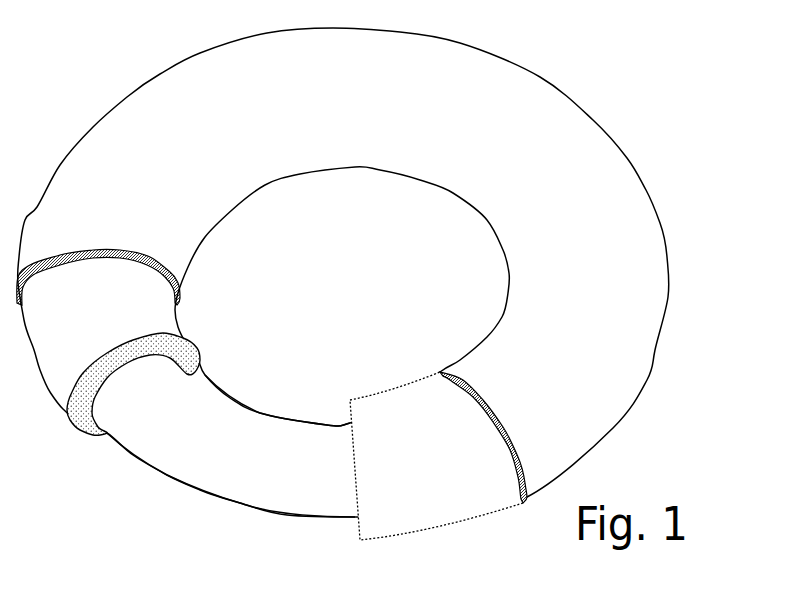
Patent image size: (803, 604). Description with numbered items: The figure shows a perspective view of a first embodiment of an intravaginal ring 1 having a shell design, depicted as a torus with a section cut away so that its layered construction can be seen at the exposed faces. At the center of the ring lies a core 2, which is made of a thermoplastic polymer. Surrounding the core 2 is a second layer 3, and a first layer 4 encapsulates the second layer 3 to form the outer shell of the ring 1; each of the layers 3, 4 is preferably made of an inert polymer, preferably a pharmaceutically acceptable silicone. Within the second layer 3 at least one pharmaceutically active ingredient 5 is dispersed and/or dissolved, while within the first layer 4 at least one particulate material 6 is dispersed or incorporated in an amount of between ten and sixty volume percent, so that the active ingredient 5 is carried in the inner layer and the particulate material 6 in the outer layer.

The intravaginal ring 1 is at (670, 134).
The core 2 is at (233, 490).
The second layer 3 is at (447, 495).
The first layer 4 is at (615, 341).
The pharmaceutically active ingredient 5 is at (82, 433).
The particulate material 6 is at (178, 281).